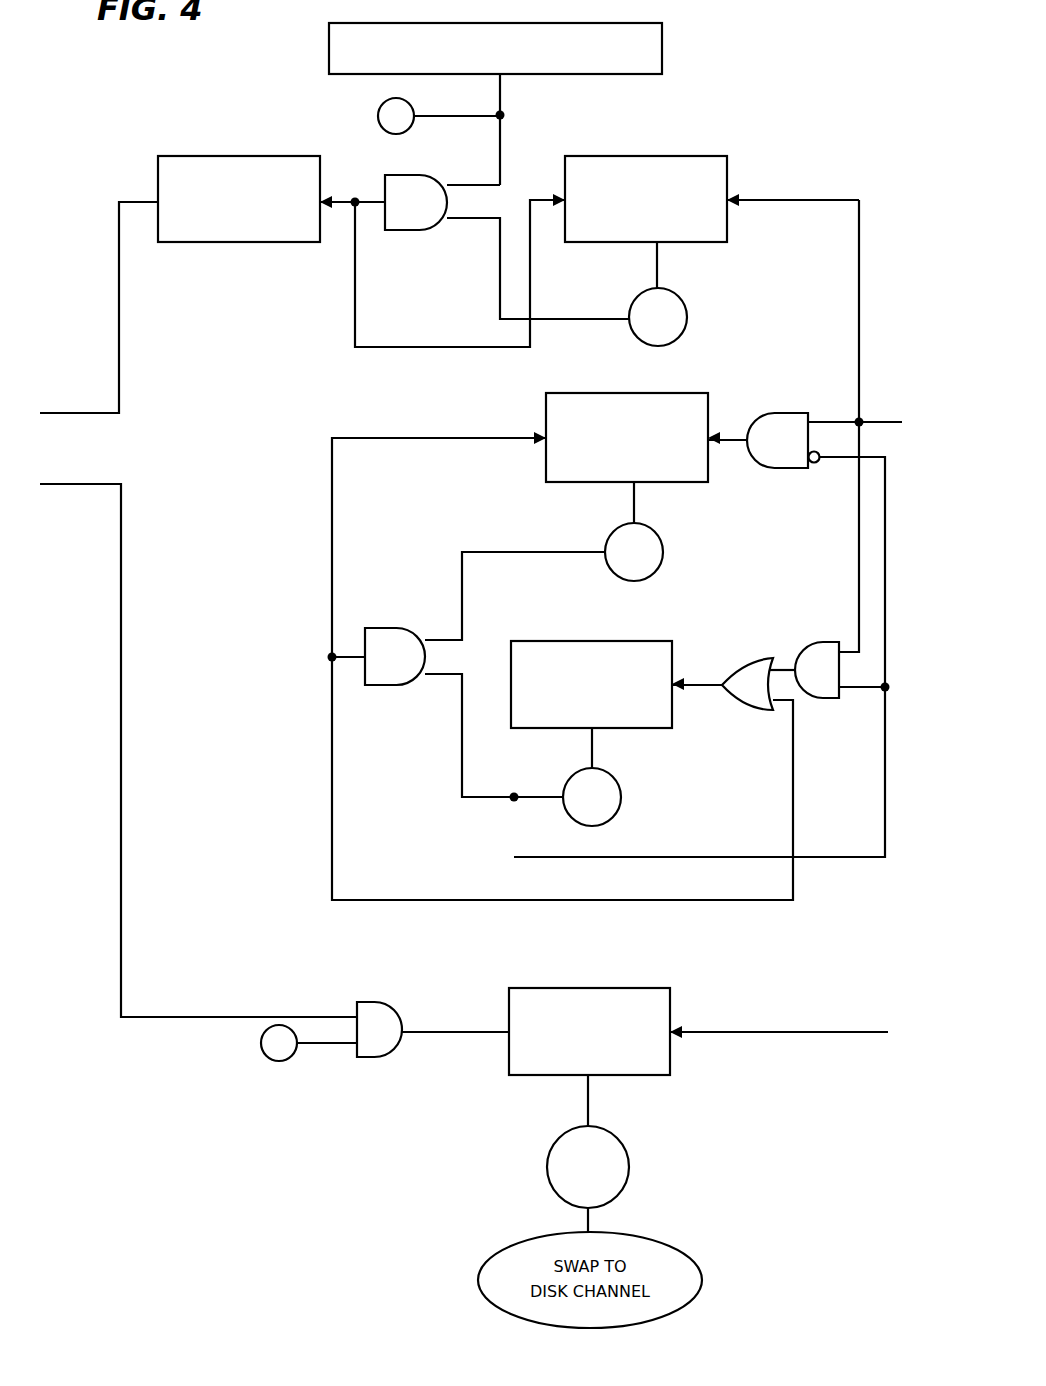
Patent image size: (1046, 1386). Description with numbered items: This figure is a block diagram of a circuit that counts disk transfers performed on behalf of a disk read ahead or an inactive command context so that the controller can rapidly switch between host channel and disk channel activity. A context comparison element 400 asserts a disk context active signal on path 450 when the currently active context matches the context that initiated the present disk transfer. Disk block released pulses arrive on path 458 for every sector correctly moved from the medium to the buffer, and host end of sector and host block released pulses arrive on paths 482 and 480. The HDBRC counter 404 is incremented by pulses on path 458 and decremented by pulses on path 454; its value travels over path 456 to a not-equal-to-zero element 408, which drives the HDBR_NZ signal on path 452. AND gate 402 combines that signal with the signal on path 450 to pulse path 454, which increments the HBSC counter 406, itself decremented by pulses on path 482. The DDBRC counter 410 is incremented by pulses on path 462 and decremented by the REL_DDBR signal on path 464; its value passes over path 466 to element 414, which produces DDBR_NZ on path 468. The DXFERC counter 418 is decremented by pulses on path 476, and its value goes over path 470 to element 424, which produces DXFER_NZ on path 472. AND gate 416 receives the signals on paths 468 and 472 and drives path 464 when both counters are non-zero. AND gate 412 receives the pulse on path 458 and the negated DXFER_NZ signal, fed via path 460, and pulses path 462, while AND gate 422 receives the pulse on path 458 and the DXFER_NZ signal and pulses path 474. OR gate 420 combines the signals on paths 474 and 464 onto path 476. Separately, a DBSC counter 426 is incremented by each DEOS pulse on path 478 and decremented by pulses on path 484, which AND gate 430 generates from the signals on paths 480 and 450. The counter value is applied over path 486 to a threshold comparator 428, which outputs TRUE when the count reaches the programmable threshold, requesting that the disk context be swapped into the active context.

The context comparison element 400 is at (664, 34).
The AND gate 402 is at (405, 232).
The HDBRC counter 404 is at (711, 156).
The HBSC counter 406 is at (201, 156).
The not-equal-to-zero element 408 is at (689, 306).
The DDBRC counter 410 is at (628, 393).
The AND gate 412 is at (782, 414).
The not-equal-to-zero element 414 is at (665, 543).
The AND gate 416 is at (388, 628).
The DXFERC counter 418 is at (588, 640).
The OR gate 420 is at (724, 658).
The AND gate 422 is at (816, 638).
The not-equal-to-zero element 424 is at (623, 790).
The DBSC counter 426 is at (641, 986).
The threshold comparator 428 is at (630, 1157).
The AND gate 430 is at (372, 1002).
The disk context active signal path 450 is at (503, 125).
The HDBR_NZ signal path 452 is at (498, 269).
The REL_HDBR signal path 454 is at (346, 314).
The HDBRC counter output path 456 is at (654, 264).
The DBR signal path 458 is at (856, 234).
The negated DXFER_NZ input path 460 is at (825, 462).
The DDBRC increment path 462 is at (740, 450).
The REL_DDBR signal path 464 is at (461, 438).
The DDBRC counter output path 466 is at (630, 500).
The DDBR_NZ signal path 468 is at (498, 558).
The DXFERC counter output path 470 is at (592, 746).
The DXFER_NZ signal path 472 is at (460, 715).
The AND gate 422 output path 474 is at (781, 656).
The DXFERC decrement path 476 is at (722, 700).
The DEOS signal path 478 is at (770, 1040).
The HBR signal path 480 is at (130, 767).
The HEOS signal path 482 is at (121, 314).
The DBSC decrement path 484 is at (437, 1036).
The DBSC counter output path 486 is at (592, 1095).